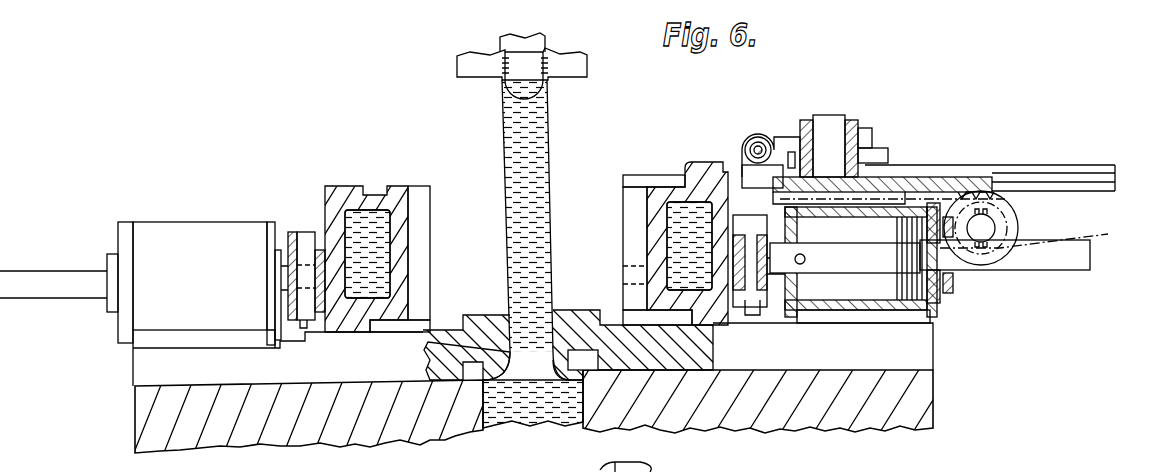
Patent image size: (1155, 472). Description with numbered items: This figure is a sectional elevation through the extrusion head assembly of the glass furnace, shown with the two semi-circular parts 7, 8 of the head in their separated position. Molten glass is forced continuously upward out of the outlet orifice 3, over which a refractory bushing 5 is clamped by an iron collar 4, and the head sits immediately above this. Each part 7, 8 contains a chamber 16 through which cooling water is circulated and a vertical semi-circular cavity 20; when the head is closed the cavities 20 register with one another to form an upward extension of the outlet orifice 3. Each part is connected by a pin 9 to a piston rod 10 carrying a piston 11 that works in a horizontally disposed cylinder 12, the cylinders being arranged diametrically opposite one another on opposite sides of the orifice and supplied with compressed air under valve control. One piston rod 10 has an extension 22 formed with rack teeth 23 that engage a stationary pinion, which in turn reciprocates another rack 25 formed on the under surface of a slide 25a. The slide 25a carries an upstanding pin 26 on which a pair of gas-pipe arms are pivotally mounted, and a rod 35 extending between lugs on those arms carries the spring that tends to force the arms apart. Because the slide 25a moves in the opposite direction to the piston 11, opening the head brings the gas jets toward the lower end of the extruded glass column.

The outlet orifice 3 is at (541, 392).
The iron collar 4 is at (440, 333).
The bushing 5 is at (482, 384).
The semi-circular part 7 is at (350, 207).
The semi-circular part 8 is at (672, 205).
The pin 9 is at (305, 242).
The piston rod 10 is at (870, 262).
The piston 11 is at (908, 212).
The cylinder 12 is at (152, 248).
The chamber 16 is at (365, 225).
The vertical semi-circular cavity 20 is at (420, 238).
The extension 22 is at (1078, 256).
The rack teeth 23 is at (1040, 238).
The rack 25 is at (990, 185).
The slide 25a is at (963, 188).
The upstanding pin 26 is at (830, 128).
The rod 35 is at (756, 138).